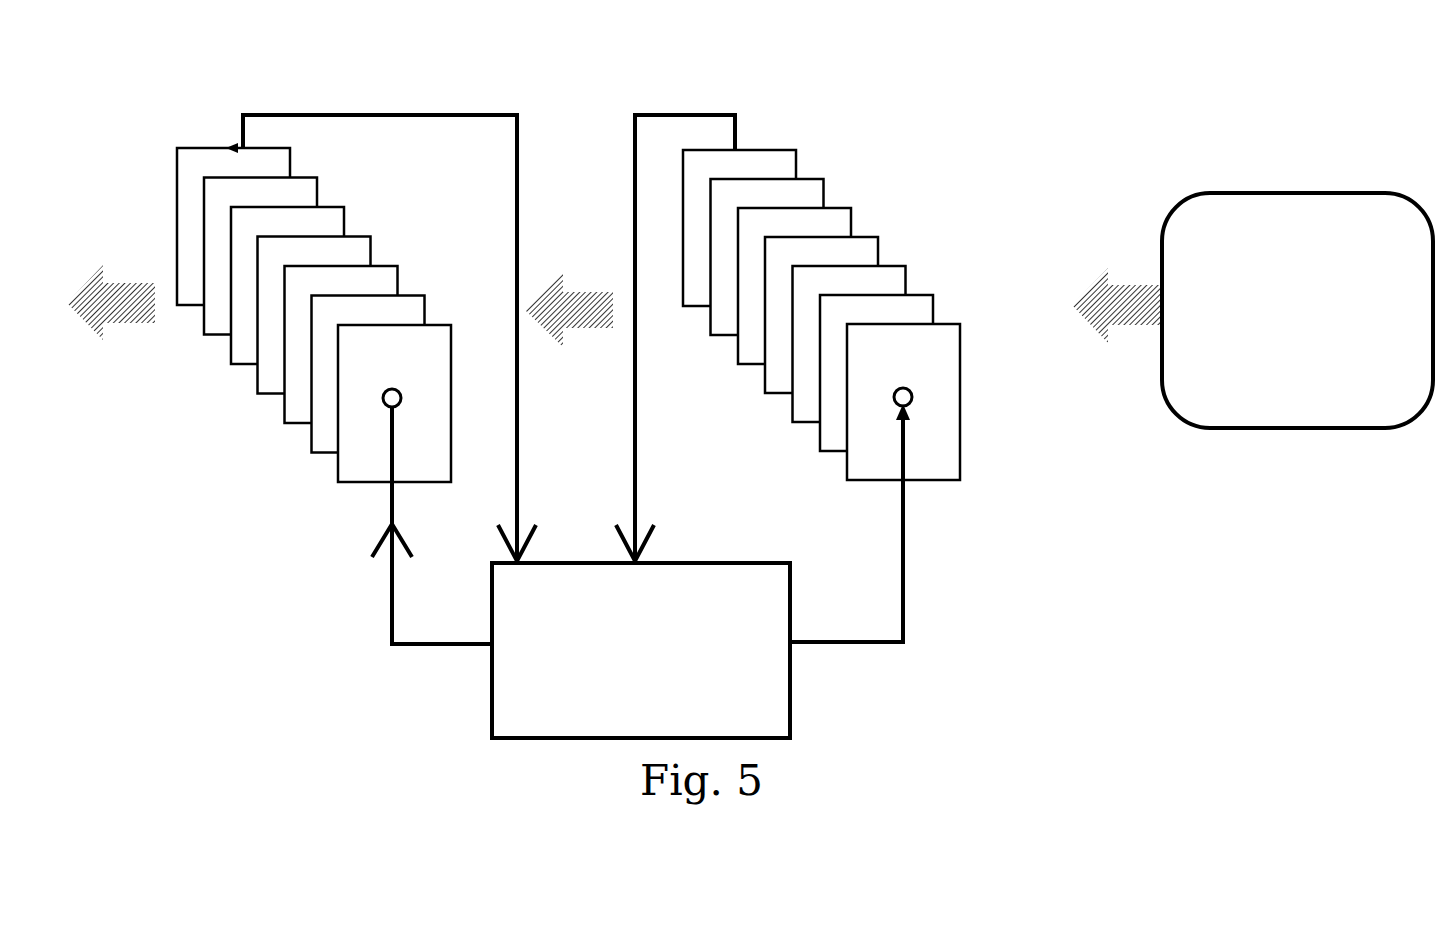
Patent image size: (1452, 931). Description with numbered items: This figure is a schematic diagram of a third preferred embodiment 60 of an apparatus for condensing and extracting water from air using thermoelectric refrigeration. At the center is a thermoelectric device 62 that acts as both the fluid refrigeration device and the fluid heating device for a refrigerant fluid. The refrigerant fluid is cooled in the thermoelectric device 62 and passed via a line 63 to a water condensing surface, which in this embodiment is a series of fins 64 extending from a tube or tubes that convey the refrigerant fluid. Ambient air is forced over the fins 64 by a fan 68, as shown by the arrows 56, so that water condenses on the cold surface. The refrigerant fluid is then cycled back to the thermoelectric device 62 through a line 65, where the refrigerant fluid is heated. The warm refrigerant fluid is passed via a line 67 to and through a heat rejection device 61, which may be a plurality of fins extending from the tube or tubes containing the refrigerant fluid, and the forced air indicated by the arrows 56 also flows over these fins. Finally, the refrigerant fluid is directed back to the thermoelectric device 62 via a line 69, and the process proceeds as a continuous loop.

The arrows 56 is at (132, 293).
The third preferred embodiment 60 is at (1050, 579).
The heat rejection device 61 is at (368, 455).
The thermoelectric device 62 is at (763, 700).
The line 63 is at (903, 537).
The fins 64 is at (943, 438).
The line 65 is at (641, 455).
The line 67 is at (387, 598).
The fan 68 is at (1277, 398).
The line 69 is at (520, 223).